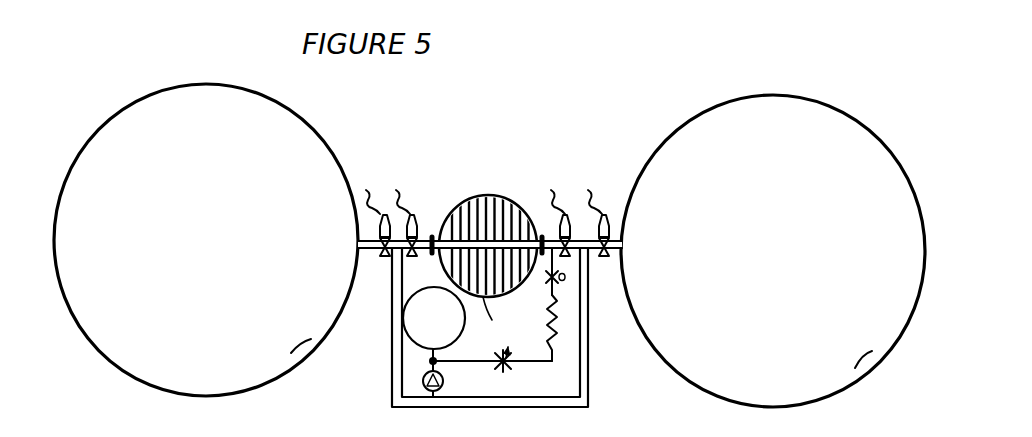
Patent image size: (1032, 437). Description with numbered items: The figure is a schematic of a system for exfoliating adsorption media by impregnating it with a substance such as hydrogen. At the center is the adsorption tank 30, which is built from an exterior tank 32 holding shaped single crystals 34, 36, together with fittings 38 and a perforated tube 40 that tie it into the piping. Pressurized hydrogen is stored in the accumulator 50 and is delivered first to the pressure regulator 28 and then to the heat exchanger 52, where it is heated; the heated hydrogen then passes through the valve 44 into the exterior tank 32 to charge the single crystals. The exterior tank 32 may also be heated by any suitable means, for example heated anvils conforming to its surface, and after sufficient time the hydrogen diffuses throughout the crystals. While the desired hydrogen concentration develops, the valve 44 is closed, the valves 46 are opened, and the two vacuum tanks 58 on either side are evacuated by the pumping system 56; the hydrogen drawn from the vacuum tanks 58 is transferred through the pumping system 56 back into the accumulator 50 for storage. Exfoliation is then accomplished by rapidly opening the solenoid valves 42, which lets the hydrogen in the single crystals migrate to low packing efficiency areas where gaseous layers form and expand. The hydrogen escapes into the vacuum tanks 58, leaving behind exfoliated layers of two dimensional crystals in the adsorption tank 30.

The pressure regulator 28 is at (504, 365).
The adsorption tank 30 is at (498, 117).
The exterior tank 32 is at (501, 316).
The shaped crystal 34 is at (465, 203).
The shaped crystal 36 is at (492, 207).
The fittings 38 is at (435, 229).
The perforated tube 40 is at (443, 268).
The solenoid valves 42 is at (418, 211).
The valve 44 is at (548, 281).
The valves 46 is at (391, 210).
The accumulator 50 is at (451, 323).
The heat exchanger 52 is at (555, 333).
The pumping system 56 is at (443, 375).
The vacuum tanks 58 is at (312, 343).